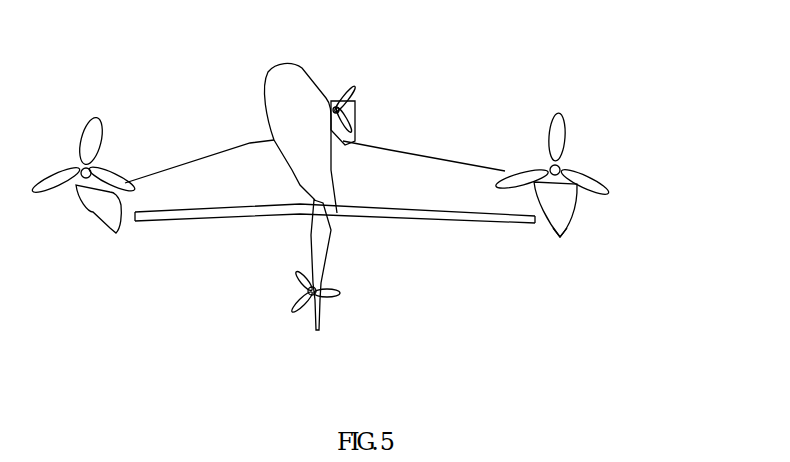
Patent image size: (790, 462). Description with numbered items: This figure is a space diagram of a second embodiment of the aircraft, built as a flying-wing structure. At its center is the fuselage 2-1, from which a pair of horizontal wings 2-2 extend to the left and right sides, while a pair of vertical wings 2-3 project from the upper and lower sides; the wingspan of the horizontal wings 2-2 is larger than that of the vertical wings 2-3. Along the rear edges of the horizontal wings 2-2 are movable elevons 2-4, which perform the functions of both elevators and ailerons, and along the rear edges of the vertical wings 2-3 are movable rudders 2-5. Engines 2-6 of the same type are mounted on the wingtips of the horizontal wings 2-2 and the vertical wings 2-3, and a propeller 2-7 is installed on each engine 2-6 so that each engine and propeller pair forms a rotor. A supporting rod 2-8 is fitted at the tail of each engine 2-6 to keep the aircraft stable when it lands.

The fuselage 2-1 is at (297, 72).
The horizontal wing 2-2 is at (388, 148).
The vertical wing 2-3 is at (315, 235).
The elevon 2-4 is at (445, 213).
The rudder 2-5 is at (332, 258).
The engine 2-6 is at (573, 208).
The propeller 2-7 is at (576, 168).
The supporting rod 2-8 is at (562, 237).